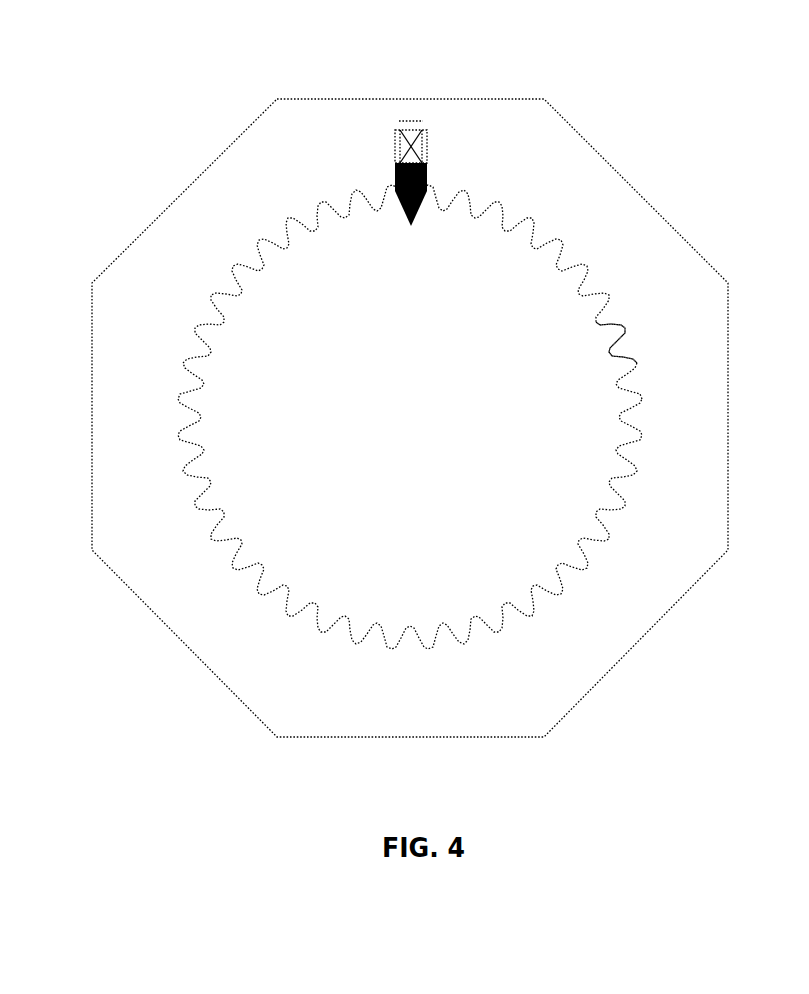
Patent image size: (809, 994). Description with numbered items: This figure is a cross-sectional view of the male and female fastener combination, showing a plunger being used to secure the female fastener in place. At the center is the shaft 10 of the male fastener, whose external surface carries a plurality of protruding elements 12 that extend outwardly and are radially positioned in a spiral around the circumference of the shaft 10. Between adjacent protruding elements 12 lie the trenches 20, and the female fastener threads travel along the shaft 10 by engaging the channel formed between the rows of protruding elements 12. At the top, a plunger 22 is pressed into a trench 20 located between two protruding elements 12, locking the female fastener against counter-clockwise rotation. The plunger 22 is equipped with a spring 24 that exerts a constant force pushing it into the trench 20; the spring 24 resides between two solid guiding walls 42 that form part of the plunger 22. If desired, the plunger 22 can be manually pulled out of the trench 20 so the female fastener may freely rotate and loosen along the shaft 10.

The shaft 10 is at (444, 388).
The protruding elements 12 is at (583, 275).
The trench 20 is at (640, 377).
The plunger 22 is at (458, 150).
The spring 24 is at (413, 127).
The solid guiding walls 42 is at (395, 130).